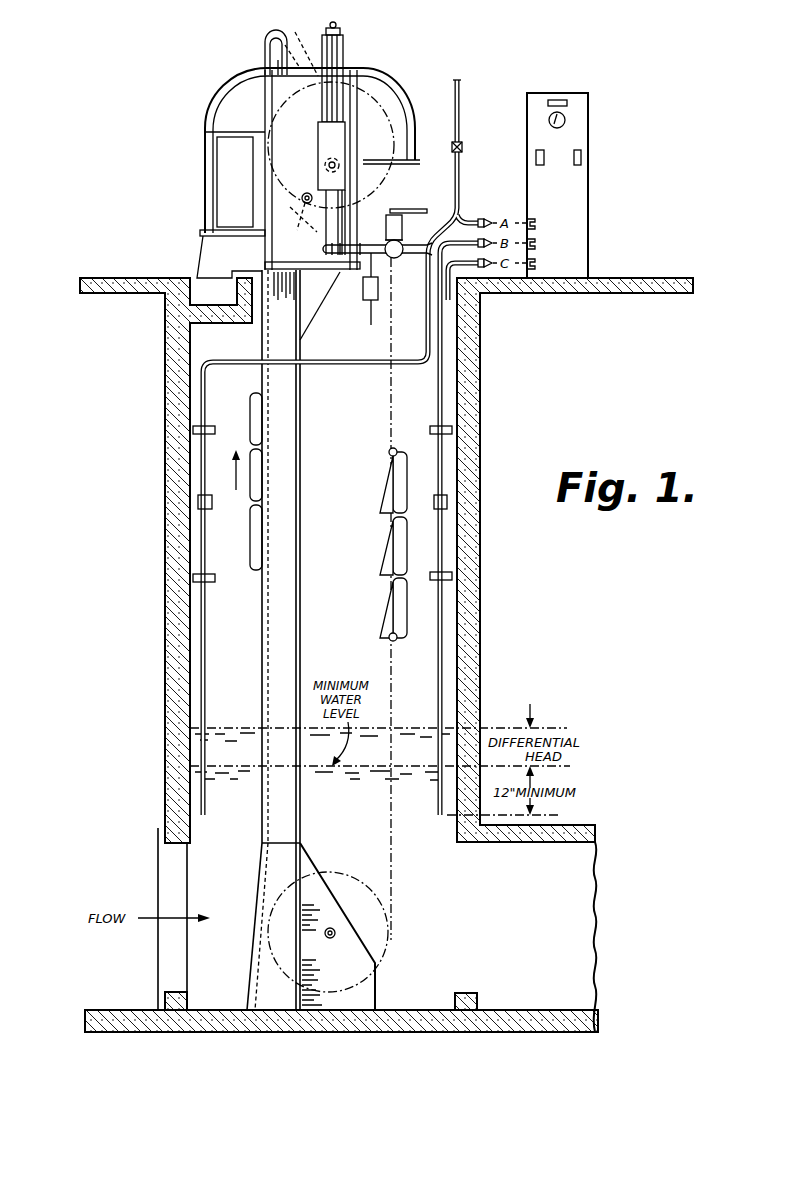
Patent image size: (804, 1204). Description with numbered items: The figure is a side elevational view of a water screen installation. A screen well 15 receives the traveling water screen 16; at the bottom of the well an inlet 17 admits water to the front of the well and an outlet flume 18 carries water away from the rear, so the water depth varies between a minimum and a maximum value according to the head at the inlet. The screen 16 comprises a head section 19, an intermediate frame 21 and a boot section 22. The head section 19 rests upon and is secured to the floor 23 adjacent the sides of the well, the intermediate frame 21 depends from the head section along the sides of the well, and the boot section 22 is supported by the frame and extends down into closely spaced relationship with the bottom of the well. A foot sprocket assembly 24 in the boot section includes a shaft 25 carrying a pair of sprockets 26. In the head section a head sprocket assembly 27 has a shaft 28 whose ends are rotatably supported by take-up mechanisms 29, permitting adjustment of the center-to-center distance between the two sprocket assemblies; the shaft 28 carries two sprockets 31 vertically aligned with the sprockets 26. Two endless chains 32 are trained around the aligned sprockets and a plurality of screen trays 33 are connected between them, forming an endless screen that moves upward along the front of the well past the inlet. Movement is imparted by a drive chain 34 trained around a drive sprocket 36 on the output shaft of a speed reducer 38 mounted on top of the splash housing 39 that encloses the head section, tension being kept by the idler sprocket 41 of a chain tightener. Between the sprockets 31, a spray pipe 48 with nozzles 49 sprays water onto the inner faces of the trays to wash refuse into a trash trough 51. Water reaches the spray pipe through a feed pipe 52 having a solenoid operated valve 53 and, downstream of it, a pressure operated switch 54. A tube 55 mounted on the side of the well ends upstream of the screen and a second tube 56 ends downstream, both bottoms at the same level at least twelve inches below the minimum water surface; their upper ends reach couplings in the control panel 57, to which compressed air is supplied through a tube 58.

The screen well 15 is at (481, 414).
The traveling water screen 16 is at (198, 175).
The inlet 17 is at (168, 862).
The outlet flume 18 is at (558, 843).
The head section 19 is at (368, 186).
The intermediate frame 21 is at (304, 583).
The boot section 22 is at (252, 887).
The floor 23 is at (142, 279).
The foot sprocket assembly 24 is at (386, 965).
The shaft 25 is at (330, 939).
The sprockets 26 is at (340, 874).
The head sprocket assembly 27 is at (392, 200).
The shaft 28 is at (323, 164).
The take-up mechanisms 29 is at (352, 132).
The sprockets 31 is at (294, 127).
The endless chains 32 is at (390, 526).
The screen trays 33 is at (385, 486).
The drive chain 34 is at (339, 78).
The drive sprocket 36 is at (268, 55).
The speed reducer 38 is at (268, 40).
The splash housing 39 is at (206, 107).
The idler sprocket 41 is at (303, 45).
The spray pipe 48 is at (312, 170).
The nozzles 49 is at (304, 194).
The trash trough 51 is at (210, 324).
The feed pipe 52 is at (364, 245).
The solenoid operated valve 53 is at (403, 227).
The pressure operated switch 54 is at (380, 291).
The tube 55 is at (340, 367).
The second tube 56 is at (438, 400).
The control panel 57 is at (591, 186).
The tube 58 is at (461, 178).